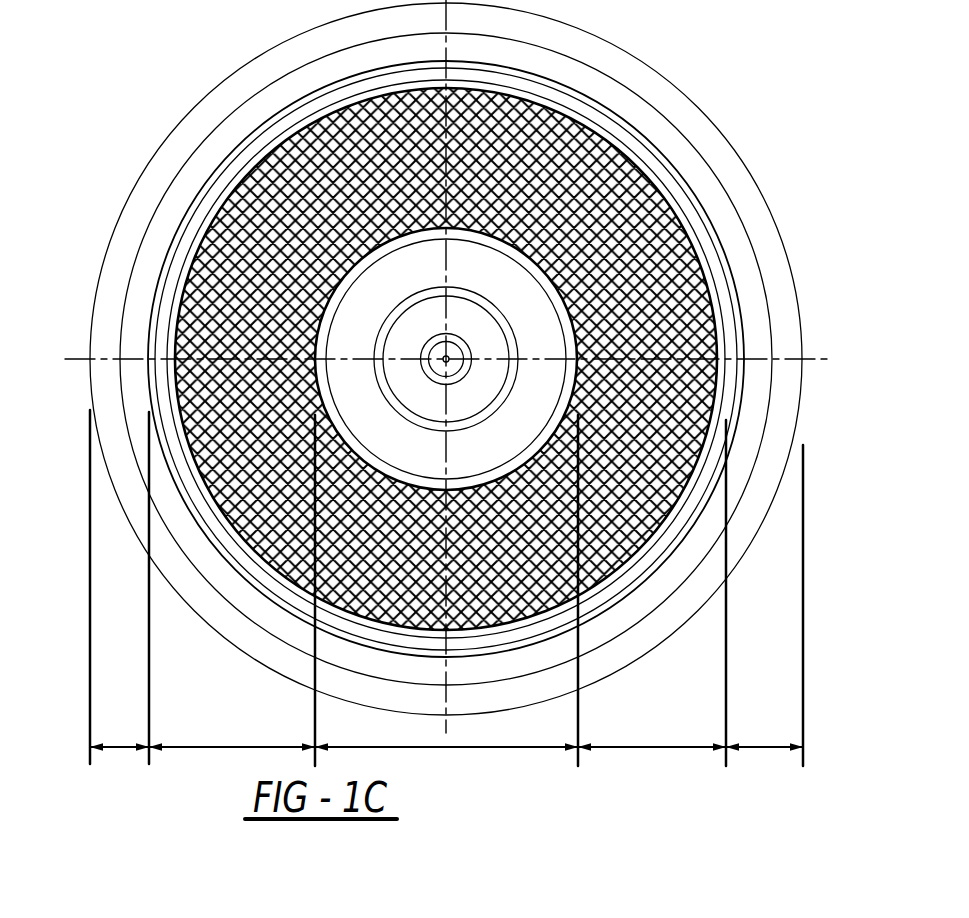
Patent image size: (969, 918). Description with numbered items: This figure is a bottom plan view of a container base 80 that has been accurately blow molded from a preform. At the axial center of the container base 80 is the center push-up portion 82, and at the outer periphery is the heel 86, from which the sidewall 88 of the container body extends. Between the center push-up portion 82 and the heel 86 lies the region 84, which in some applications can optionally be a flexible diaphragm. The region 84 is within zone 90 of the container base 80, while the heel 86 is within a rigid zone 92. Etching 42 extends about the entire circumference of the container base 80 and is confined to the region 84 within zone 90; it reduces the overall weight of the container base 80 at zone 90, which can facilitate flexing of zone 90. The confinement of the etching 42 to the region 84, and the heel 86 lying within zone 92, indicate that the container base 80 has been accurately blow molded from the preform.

The container base 80 is at (125, 119).
The center push-up portion 82 is at (475, 748).
The region 84 is at (228, 233).
The heel 86 is at (718, 233).
The sidewall 88 is at (800, 297).
The etching 42 is at (630, 207).
The zone 90 is at (212, 742).
The rigid zone 92 is at (125, 740).